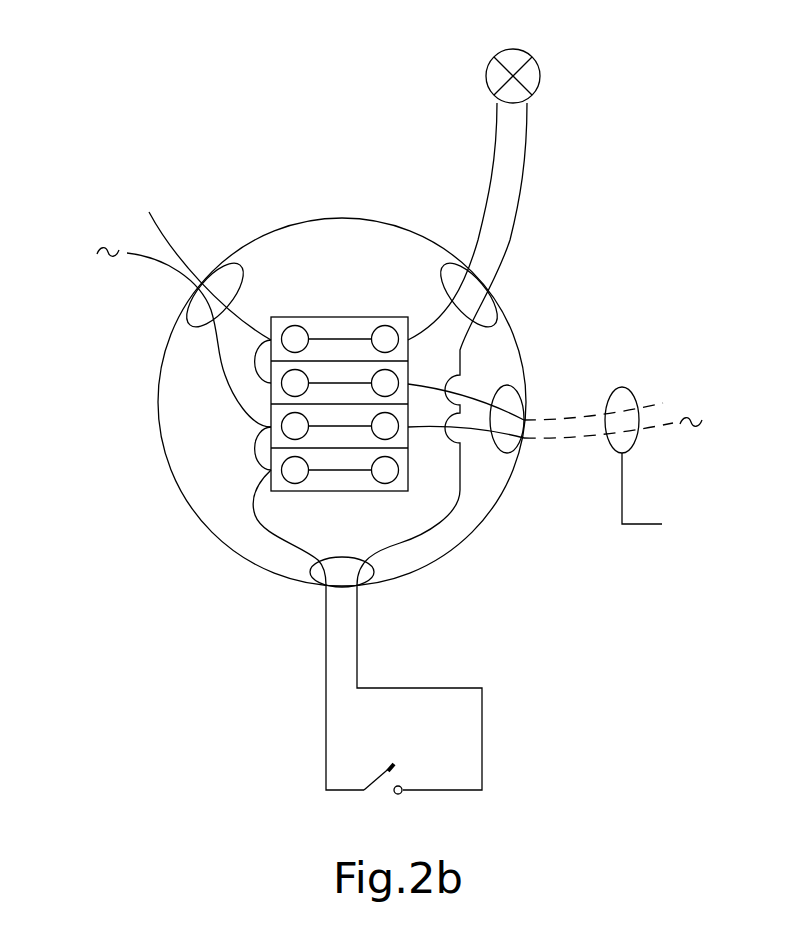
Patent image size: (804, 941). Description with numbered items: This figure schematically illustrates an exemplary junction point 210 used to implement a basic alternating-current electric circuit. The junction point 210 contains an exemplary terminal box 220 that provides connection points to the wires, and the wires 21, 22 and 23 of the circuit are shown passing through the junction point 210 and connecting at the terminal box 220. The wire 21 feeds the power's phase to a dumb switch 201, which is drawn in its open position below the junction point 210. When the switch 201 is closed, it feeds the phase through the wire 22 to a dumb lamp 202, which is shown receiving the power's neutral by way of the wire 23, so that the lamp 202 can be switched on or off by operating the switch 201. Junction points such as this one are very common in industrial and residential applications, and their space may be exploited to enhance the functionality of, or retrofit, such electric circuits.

The junction point 210 is at (157, 402).
The terminal box 220 is at (337, 317).
The dumb lamp 202 is at (513, 48).
The wire 23 is at (180, 241).
The wire 21 is at (162, 266).
The wire 22 is at (523, 202).
The dumb switch 201 is at (382, 789).